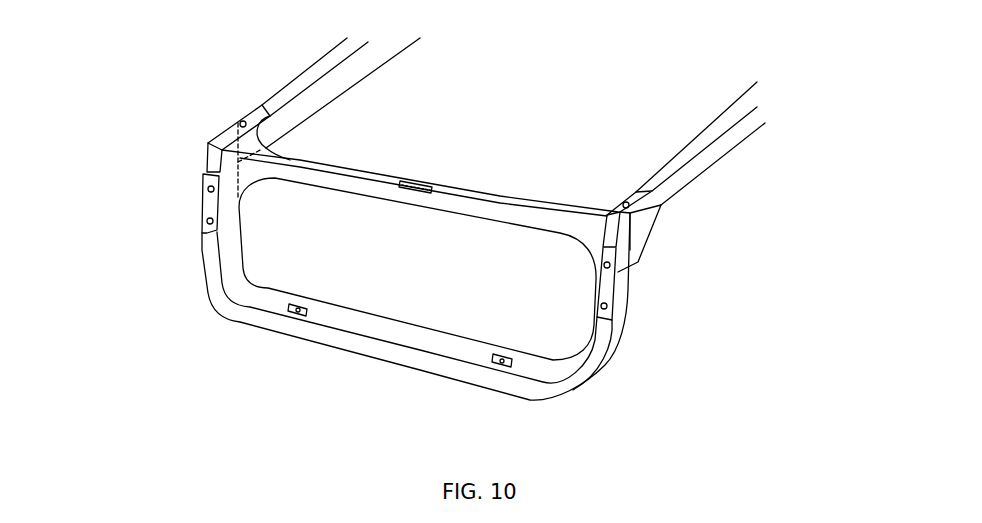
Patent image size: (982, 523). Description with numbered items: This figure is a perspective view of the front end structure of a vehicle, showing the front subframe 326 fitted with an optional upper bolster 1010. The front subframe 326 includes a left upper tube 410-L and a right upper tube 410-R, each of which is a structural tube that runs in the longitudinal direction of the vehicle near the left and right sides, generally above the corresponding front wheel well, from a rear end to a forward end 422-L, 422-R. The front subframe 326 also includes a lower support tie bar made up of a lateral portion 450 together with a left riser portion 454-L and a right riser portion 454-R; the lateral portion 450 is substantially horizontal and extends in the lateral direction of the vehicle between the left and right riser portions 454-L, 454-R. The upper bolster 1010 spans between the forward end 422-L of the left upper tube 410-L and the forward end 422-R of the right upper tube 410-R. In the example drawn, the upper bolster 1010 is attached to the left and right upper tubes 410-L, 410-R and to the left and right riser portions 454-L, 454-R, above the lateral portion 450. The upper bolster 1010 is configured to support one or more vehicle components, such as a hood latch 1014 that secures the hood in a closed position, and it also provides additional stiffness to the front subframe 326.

The front subframe 326 is at (727, 320).
The upper bolster 1010 is at (522, 203).
The hood latch 1014 is at (418, 181).
The lateral portion 450 is at (373, 328).
The forward end of right upper tube 422-R is at (208, 142).
The forward end of left upper tube 422-L is at (611, 203).
The right upper tube 410-R is at (353, 62).
The left upper tube 410-L is at (717, 158).
The right riser portion 454-R is at (190, 271).
The left riser portion 454-L is at (640, 360).